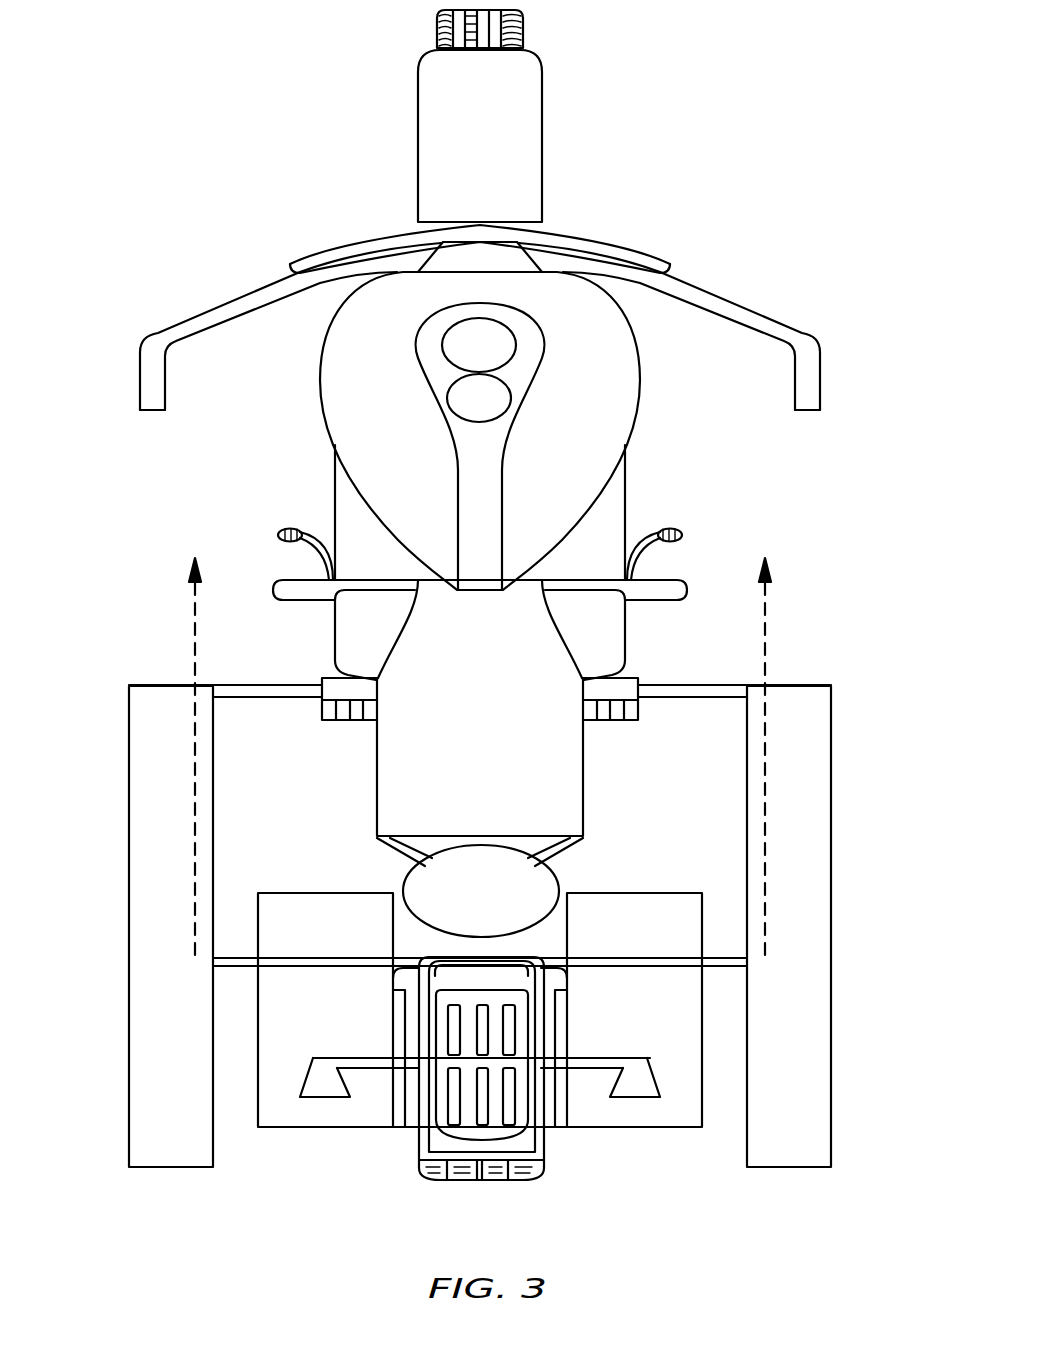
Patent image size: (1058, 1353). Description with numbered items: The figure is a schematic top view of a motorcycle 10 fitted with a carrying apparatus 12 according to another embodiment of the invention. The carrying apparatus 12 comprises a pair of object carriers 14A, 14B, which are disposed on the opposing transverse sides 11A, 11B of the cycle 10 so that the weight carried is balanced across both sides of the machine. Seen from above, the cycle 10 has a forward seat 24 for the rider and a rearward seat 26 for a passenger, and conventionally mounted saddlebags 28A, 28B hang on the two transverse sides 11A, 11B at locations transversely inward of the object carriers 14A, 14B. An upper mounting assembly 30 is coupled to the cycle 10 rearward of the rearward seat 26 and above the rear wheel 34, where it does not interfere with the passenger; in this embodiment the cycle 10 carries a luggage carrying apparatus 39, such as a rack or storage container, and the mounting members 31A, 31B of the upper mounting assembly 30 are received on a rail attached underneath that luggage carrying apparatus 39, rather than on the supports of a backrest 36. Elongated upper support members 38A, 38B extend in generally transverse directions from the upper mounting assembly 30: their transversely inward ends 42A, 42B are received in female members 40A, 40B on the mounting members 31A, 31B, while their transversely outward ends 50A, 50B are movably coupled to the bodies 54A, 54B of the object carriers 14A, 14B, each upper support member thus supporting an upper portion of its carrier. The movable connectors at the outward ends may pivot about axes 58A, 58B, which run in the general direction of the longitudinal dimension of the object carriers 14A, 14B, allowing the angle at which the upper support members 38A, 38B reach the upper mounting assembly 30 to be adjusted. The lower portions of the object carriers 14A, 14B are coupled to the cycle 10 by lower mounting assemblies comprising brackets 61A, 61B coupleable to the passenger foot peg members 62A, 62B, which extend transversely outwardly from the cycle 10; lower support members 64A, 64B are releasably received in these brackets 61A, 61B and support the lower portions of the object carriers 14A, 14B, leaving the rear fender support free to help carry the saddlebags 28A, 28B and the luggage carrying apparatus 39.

The motorcycle 10 is at (728, 216).
The transverse side 11A is at (90, 538).
The transverse side 11B is at (937, 538).
The carrying apparatus 12 is at (404, 1188).
The object carrier 14A is at (165, 1143).
The object carrier 14B is at (802, 1143).
The forward seat 24 is at (495, 675).
The rearward seat 26 is at (495, 885).
The saddlebag 28A is at (345, 1040).
The saddlebag 28B is at (665, 1040).
The upper mounting assembly 30 is at (503, 913).
The mounting member 31A is at (405, 968).
The mounting member 31B is at (555, 968).
The rear wheel 34 is at (519, 1180).
The backrest 36 is at (470, 972).
The upper support member 38A is at (300, 950).
The upper support member 38B is at (660, 950).
The luggage carrying apparatus 39 is at (419, 1152).
The female member 40A is at (403, 955).
The female member 40B is at (557, 955).
The transversely inward end 42A is at (402, 957).
The transversely inward end 42B is at (558, 957).
The transversely outward end 50A is at (230, 958).
The transversely outward end 50B is at (730, 958).
The body 54A is at (195, 1095).
The body 54B is at (813, 1095).
The axis 58A is at (195, 636).
The axis 58B is at (765, 636).
The bracket 61A is at (315, 672).
The bracket 61B is at (645, 672).
The passenger foot peg member 62A is at (340, 720).
The passenger foot peg member 62B is at (620, 720).
The lower support member 64A is at (232, 686).
The lower support member 64B is at (728, 686).